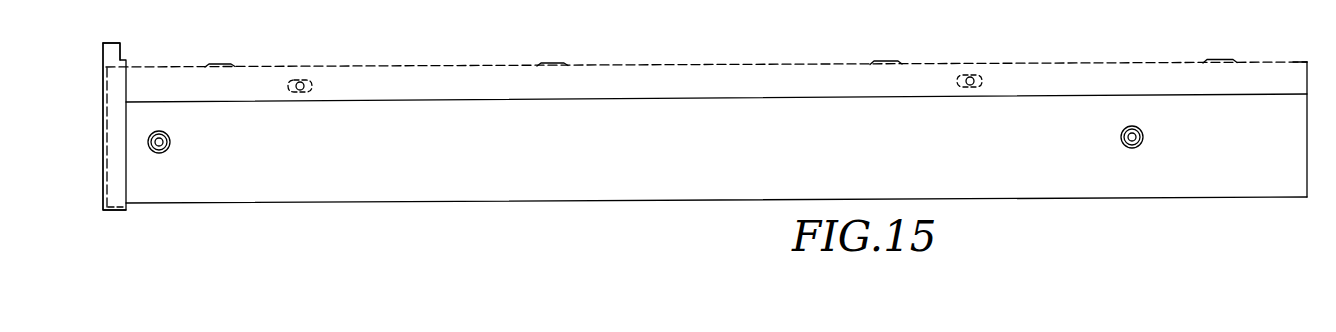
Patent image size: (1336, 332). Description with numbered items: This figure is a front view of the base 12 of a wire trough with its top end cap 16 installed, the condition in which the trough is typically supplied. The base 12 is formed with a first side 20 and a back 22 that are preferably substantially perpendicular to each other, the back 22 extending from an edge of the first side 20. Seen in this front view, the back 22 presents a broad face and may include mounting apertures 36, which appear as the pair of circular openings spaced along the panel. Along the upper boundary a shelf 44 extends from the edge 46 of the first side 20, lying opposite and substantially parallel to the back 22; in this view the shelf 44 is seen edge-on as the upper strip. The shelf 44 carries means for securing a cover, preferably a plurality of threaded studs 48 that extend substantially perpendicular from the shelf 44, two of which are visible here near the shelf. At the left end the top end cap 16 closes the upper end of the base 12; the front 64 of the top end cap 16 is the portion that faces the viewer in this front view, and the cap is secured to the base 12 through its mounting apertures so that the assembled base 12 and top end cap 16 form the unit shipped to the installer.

The base 12 is at (435, 196).
The top end cap 16 is at (119, 200).
The first side 20 is at (761, 64).
The back 22 is at (646, 168).
The mounting apertures 36 is at (171, 138).
The shelf 44 is at (410, 78).
The edge 46 is at (1104, 60).
The threaded studs 48 is at (303, 92).
The front 64 is at (117, 49).